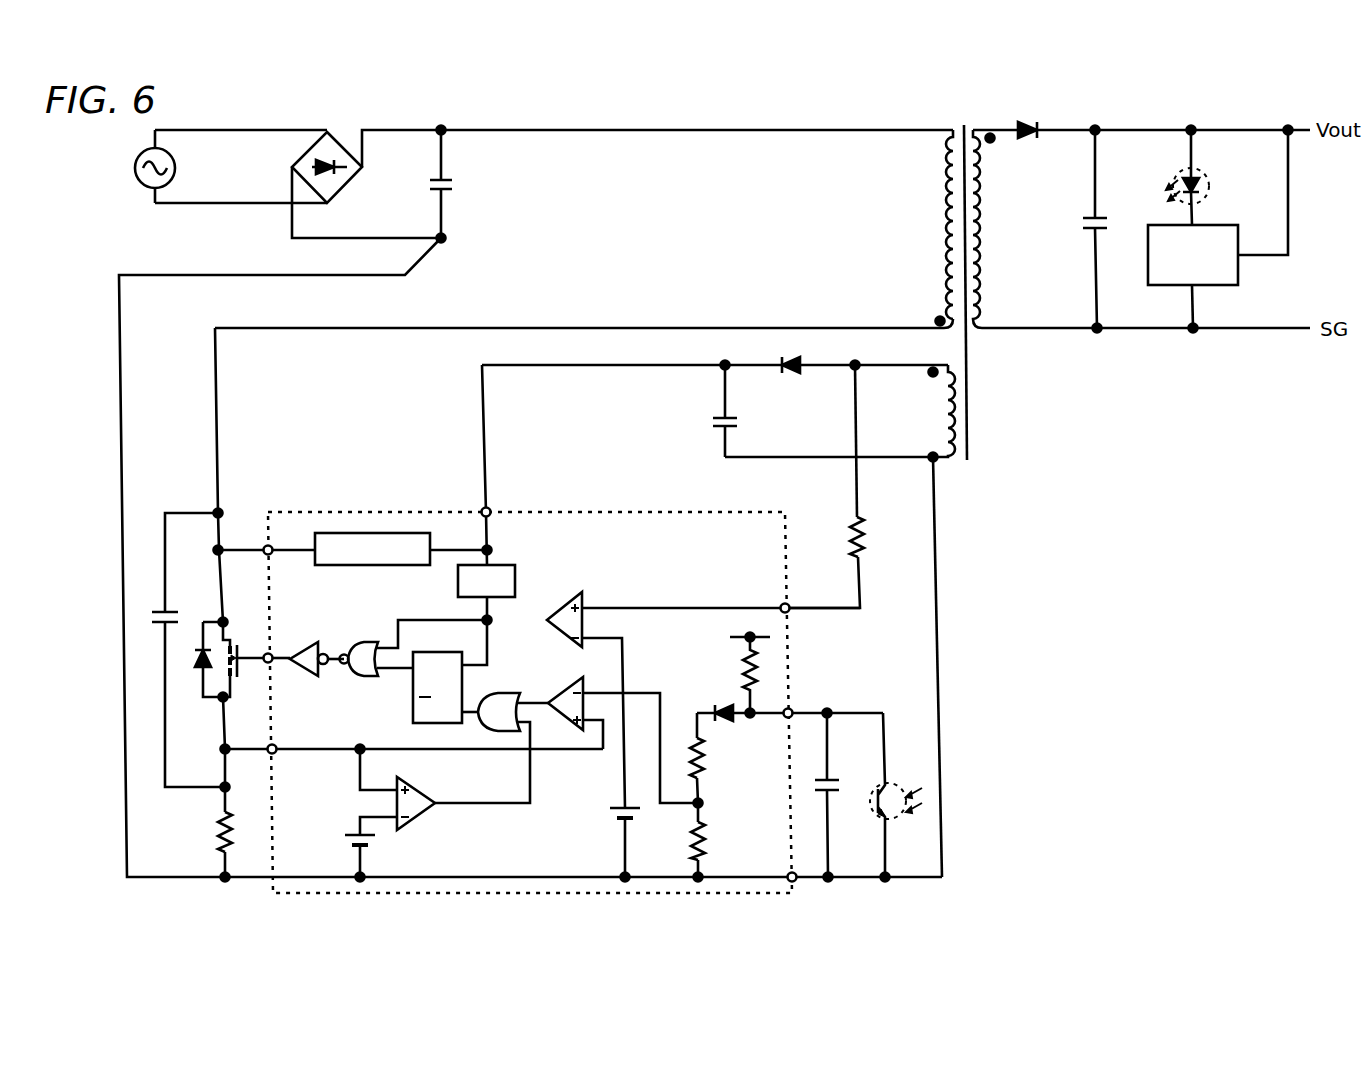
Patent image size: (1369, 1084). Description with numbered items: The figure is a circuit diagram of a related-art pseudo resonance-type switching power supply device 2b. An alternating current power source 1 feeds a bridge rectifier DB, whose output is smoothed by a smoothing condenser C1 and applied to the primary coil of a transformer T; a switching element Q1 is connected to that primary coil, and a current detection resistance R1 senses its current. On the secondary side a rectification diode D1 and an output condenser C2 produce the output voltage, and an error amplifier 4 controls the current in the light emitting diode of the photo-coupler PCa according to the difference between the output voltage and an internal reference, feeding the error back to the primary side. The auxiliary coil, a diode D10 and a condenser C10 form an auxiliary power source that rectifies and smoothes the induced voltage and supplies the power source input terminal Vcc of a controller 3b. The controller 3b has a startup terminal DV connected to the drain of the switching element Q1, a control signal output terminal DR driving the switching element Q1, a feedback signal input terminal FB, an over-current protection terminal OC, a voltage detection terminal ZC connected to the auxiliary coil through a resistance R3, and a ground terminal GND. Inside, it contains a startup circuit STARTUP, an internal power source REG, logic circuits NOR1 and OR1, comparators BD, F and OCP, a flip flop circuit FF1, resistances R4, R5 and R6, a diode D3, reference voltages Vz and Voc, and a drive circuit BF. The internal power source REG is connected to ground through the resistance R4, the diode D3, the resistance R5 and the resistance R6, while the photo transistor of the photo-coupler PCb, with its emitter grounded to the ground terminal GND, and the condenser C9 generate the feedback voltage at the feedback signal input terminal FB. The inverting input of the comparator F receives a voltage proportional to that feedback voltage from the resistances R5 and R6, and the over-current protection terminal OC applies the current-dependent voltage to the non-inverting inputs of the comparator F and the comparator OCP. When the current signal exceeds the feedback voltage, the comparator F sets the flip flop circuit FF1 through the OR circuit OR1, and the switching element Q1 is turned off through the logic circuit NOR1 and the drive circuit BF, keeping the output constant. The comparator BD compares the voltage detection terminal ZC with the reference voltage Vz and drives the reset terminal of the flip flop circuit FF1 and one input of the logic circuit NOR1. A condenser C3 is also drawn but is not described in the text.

The alternating current power source 1 is at (132, 154).
The switching power supply device 2b is at (625, 124).
The controller 3b is at (592, 500).
The error amplifier 4 is at (1238, 281).
The bridge rectifier DB is at (312, 167).
The smoothing condenser C1 is at (431, 184).
The transformer T is at (1017, 280).
The rectification diode D1 is at (1163, 147).
The output condenser C2 is at (1086, 229).
The photo-coupler PCa is at (1170, 176).
The diode D10 is at (715, 379).
The condenser for auxiliary power source C10 is at (713, 409).
The resistance R3 is at (843, 485).
The Vcc terminal Vcc is at (480, 509).
The startup circuit STARTUP is at (380, 549).
The internal power source REG is at (486, 615).
The DV terminal DV is at (267, 540).
The capacitor C3 is at (180, 650).
The switching element Q1 is at (228, 648).
The DR terminal DR is at (264, 652).
The drive circuit BF is at (317, 645).
The logic circuit NOR1 is at (410, 645).
The flip flop circuit FF1 is at (445, 675).
The OR circuit OR1 is at (491, 735).
The comparator F is at (623, 728).
The comparator BD is at (702, 689).
The ZC terminal ZC is at (790, 619).
The OC terminal OC is at (266, 745).
The comparator OCP is at (406, 792).
The reference voltage Voc is at (376, 858).
The current detection resistance R1 is at (201, 847).
The reference voltage Vz is at (611, 838).
The resistance R4 is at (729, 668).
The diode D3 is at (790, 726).
The FB terminal FB is at (794, 709).
The resistance R5 is at (737, 792).
The resistance R6 is at (715, 842).
The condenser C9 is at (838, 797).
The photo-coupler PCb is at (900, 797).
The GND terminal GND is at (795, 884).